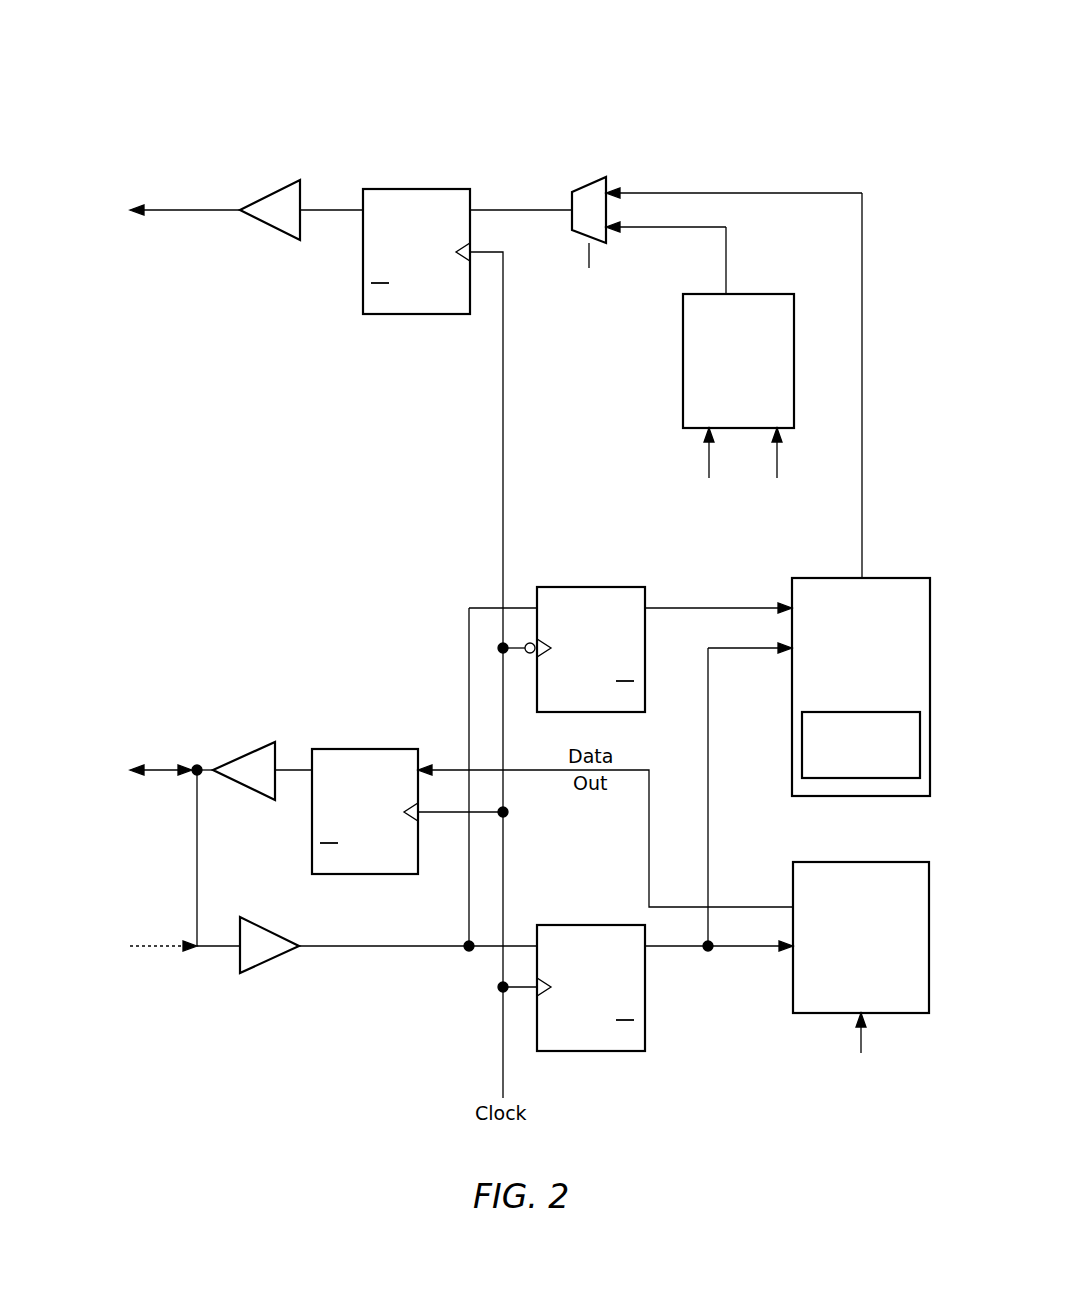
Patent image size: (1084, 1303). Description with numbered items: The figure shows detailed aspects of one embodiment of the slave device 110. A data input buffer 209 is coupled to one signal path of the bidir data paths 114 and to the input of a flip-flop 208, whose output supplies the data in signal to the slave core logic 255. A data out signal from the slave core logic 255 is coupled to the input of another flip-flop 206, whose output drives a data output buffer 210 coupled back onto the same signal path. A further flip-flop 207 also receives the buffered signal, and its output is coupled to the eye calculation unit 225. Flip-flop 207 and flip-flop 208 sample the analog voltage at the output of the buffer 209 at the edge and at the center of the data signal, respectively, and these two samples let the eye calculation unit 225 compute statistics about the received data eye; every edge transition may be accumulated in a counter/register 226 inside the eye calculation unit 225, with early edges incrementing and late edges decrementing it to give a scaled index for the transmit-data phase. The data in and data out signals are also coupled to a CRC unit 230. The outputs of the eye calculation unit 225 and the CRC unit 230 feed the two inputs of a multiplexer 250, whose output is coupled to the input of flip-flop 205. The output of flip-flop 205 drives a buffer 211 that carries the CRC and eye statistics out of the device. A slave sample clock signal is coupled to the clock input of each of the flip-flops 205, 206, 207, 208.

The slave device 110 is at (223, 84).
The bidir data paths 114 is at (140, 833).
The flip-flop 205 is at (393, 315).
The flip-flop 206 is at (395, 749).
The flip-flop 207 is at (555, 587).
The flip-flop 208 is at (618, 1052).
The data input buffer 209 is at (242, 973).
The data output buffer 210 is at (253, 743).
The buffer 211 is at (299, 241).
The eye calculation unit 225 is at (819, 687).
The counter/register 226 is at (861, 745).
The CRC unit 230 is at (752, 379).
The multiplexer 250 is at (603, 177).
The slave core logic 255 is at (861, 987).